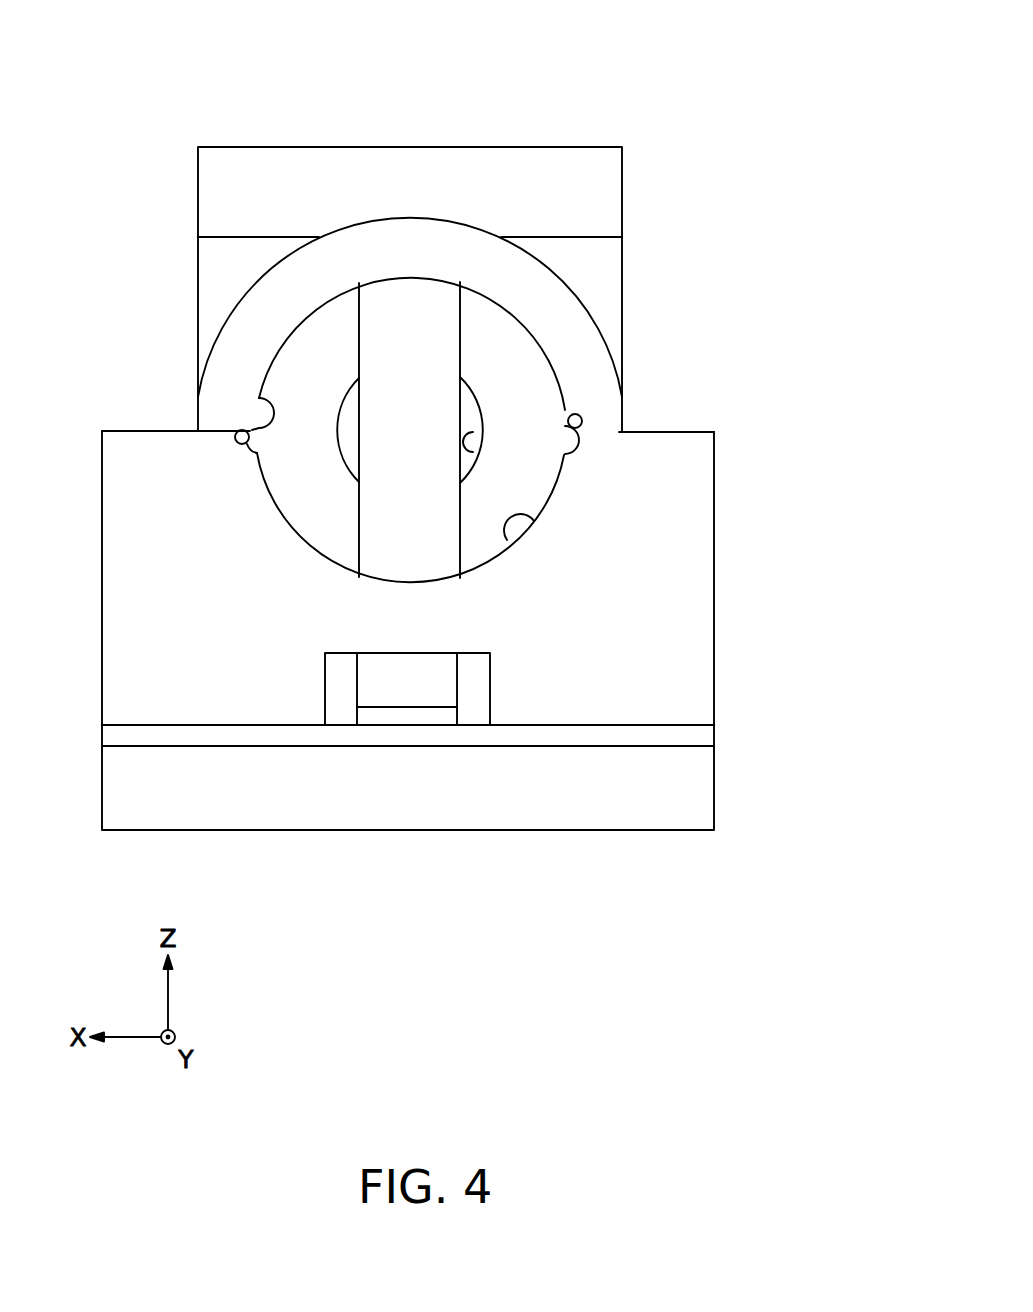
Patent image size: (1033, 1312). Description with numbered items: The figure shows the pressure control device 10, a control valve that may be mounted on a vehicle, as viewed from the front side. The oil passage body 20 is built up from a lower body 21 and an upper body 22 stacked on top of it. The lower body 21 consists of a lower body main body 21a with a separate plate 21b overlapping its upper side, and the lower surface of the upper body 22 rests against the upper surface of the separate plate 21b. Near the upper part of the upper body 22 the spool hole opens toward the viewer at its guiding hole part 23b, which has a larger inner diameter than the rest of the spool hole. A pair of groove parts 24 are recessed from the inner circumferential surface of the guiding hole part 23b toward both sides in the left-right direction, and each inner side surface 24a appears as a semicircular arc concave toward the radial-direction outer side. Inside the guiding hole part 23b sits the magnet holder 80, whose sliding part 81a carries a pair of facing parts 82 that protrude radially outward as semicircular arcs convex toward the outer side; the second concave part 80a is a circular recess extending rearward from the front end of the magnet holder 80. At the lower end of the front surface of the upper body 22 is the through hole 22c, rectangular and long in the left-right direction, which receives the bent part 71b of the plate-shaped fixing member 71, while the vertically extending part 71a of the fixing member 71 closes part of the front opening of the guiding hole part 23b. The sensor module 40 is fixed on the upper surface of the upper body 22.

The pressure control device 10 is at (682, 94).
The oil passage body 20 is at (816, 681).
The lower body 21 is at (461, 823).
The lower body main body 21a is at (645, 797).
The separate plate 21b is at (572, 737).
The upper body 22 is at (461, 668).
The through hole 22c is at (325, 686).
The guiding hole part 23b is at (533, 520).
The groove part 24 is at (425, 469).
The inner side surface 24a is at (240, 432).
The sensor module 40 is at (491, 140).
The fixing member 71 is at (407, 800).
The extending part 71a is at (418, 682).
The bent part 71b is at (405, 715).
The magnet holder 80 is at (463, 400).
The second concave part 80a is at (480, 453).
The sliding part 81a is at (317, 337).
The facing part 82 is at (270, 398).